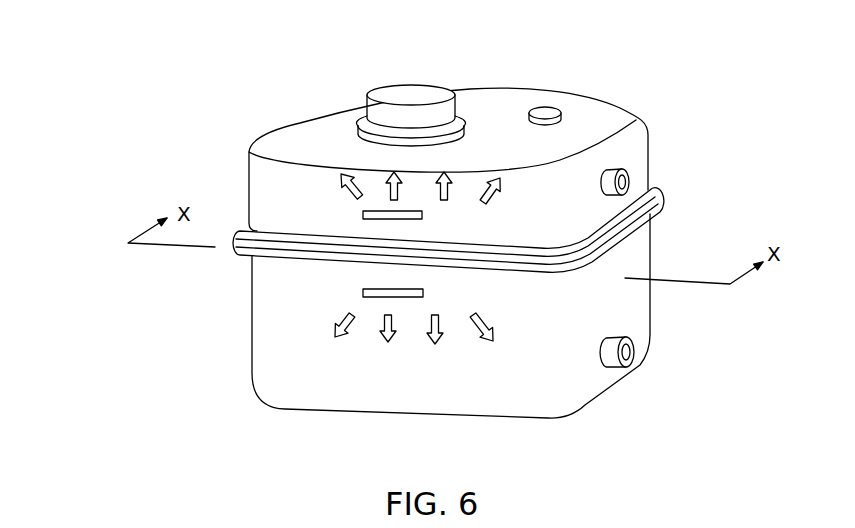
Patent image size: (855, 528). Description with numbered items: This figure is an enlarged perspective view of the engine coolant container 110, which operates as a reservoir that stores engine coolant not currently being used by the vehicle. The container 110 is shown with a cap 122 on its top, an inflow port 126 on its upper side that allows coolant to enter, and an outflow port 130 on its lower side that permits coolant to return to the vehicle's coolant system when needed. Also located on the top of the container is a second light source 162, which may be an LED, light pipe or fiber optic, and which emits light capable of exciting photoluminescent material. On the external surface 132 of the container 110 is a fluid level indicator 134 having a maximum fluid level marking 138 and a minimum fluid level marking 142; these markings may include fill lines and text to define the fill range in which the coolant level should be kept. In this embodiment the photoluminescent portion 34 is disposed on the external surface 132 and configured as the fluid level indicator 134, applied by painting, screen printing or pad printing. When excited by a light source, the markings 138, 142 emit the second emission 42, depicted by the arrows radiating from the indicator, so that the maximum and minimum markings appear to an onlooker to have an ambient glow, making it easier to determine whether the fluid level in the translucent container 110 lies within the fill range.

The engine coolant container 110 is at (187, 87).
The cap 122 is at (400, 82).
The second light source 162 is at (546, 112).
The inflow port 126 is at (622, 183).
The outflow port 130 is at (628, 356).
The maximum fluid level marking 138 is at (362, 213).
The minimum fluid level marking 142 is at (362, 293).
The external surface 132 is at (322, 390).
The photoluminescent portion 34 is at (344, 238).
The fluid level indicator 134 is at (282, 271).
The second emission 42 is at (487, 188).